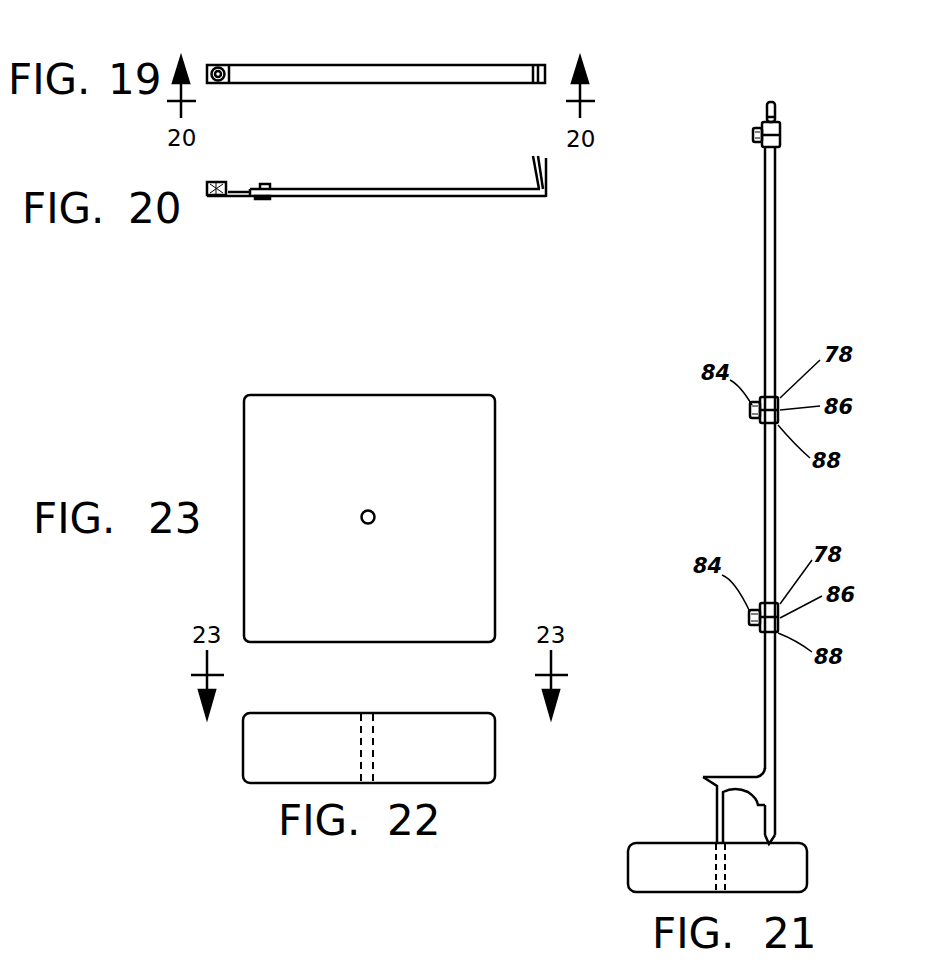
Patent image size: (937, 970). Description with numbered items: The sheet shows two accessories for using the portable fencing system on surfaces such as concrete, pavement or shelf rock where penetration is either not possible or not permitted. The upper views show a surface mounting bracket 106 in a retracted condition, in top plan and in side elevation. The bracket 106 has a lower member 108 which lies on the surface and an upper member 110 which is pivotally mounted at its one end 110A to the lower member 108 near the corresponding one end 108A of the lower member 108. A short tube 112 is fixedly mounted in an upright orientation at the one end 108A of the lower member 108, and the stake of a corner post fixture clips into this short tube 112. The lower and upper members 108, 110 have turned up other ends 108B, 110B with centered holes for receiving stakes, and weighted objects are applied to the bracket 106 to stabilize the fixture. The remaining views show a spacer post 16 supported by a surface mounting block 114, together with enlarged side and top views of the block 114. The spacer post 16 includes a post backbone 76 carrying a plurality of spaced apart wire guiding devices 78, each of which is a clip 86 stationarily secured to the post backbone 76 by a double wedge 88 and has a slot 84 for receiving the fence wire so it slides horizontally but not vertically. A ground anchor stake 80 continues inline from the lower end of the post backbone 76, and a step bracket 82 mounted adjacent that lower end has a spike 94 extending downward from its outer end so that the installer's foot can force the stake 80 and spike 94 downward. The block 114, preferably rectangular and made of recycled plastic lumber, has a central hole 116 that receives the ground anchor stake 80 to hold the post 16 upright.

In FIG. 21, the spacer post 16 is at (820, 184).
In FIG. 21, the post backbone 76 is at (777, 282).
In FIG. 21, the wire guiding device 78 is at (762, 122).
In FIG. 21, the ground anchor stake 80 is at (773, 815).
In FIG. 21, the step bracket 82 is at (729, 776).
In FIG. 21, the slot 84 is at (755, 135).
In FIG. 21, the clip 86 is at (781, 132).
In FIG. 21, the double wedge 88 is at (777, 112).
In FIG. 21, the spike 94 is at (716, 833).
In FIG. 19, the surface mounting bracket 106 is at (550, 44).
In FIG. 20, the surface mounting bracket 106 is at (550, 219).
In FIG. 20, the lower member 108 is at (400, 198).
In FIG. 20, the one end of lower member 108A is at (293, 212).
In FIG. 20, the turned up other end of lower member 108B is at (549, 184).
In FIG. 20, the upper member 110 is at (440, 188).
In FIG. 20, the one end of upper member 110A is at (292, 188).
In FIG. 20, the turned up other end of upper member 110B is at (537, 186).
In FIG. 20, the short tube 112 is at (228, 182).
In FIG. 23, the surface mounting block 114 is at (369, 394).
In FIG. 22, the surface mounting block 114 is at (288, 713).
In FIG. 21, the surface mounting block 114 is at (628, 843).
In FIG. 22, the central hole 116 is at (370, 712).
In FIG. 21, the central hole 116 is at (716, 870).